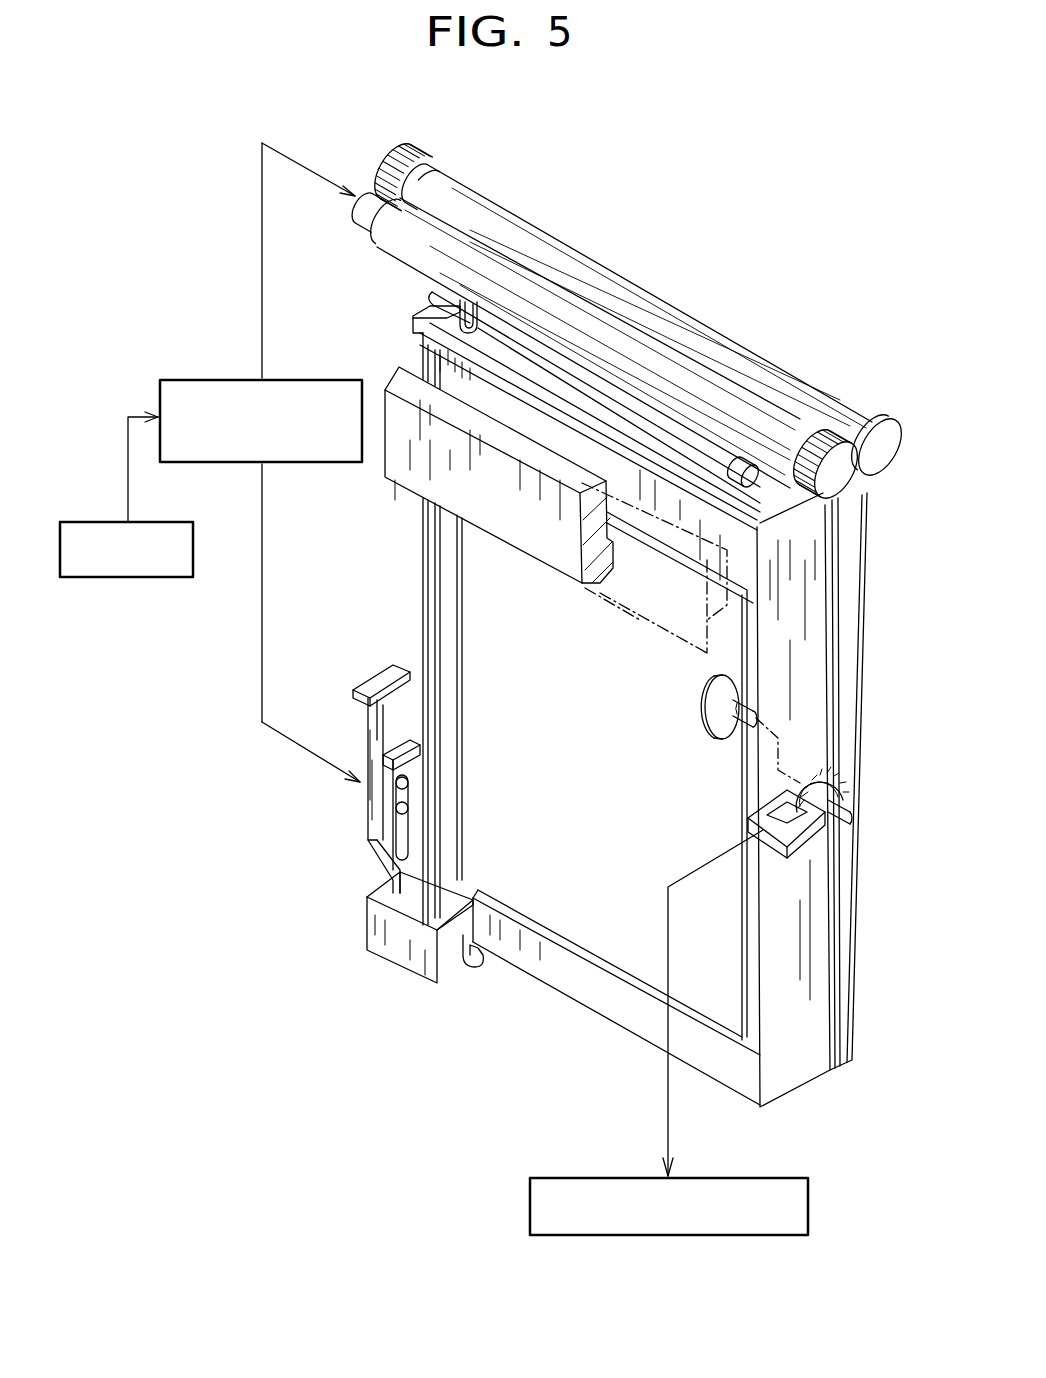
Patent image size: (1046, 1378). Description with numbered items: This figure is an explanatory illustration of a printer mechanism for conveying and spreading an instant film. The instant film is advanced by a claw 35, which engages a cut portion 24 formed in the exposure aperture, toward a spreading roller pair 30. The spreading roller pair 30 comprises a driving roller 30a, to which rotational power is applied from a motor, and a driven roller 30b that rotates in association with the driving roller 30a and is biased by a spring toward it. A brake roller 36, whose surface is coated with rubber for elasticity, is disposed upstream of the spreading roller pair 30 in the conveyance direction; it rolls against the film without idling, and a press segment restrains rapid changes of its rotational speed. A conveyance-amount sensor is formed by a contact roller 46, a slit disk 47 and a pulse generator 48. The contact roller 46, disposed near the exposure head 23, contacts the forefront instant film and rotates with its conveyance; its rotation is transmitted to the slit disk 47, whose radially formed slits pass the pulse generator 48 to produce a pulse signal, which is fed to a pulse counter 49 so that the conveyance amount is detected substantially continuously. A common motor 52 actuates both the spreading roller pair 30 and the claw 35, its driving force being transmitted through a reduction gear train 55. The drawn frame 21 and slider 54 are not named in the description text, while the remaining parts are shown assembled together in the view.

The frame 21 is at (596, 697).
The exposure head 23 is at (385, 470).
The cut portion 24 is at (482, 892).
The spreading roller pair 30 is at (628, 321).
The driving roller 30a is at (736, 198).
The driven roller 30b is at (683, 312).
The claw 35 is at (470, 966).
The brake roller 36 is at (435, 326).
The contact roller 46 is at (700, 708).
The slit disk 47 is at (828, 783).
The pulse generator 48 is at (748, 822).
The pulse counter 49 is at (594, 1178).
The motor 52 is at (128, 578).
The slider 54 is at (367, 820).
The reduction gear train 55 is at (203, 380).